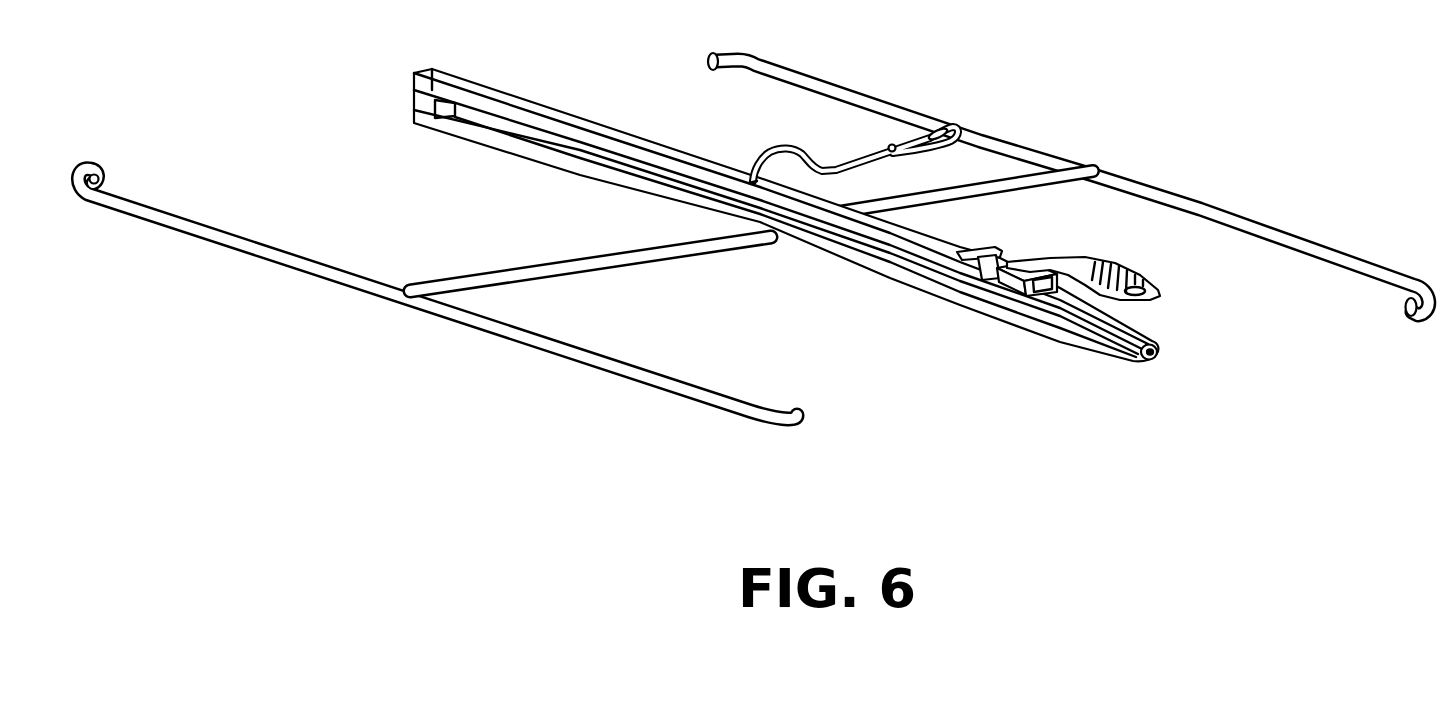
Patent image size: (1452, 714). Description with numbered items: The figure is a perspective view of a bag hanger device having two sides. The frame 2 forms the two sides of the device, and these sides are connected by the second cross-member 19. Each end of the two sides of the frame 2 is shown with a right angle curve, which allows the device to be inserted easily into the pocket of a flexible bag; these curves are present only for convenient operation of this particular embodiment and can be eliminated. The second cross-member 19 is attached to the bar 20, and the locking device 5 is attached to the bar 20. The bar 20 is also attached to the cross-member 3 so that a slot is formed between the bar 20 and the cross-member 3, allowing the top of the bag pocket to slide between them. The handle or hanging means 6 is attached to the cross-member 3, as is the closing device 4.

The frame 2 is at (1337, 253).
The cross-member 3 is at (785, 215).
The closing device 4 is at (1072, 247).
The locking device 5 is at (1160, 357).
The handle or hanging means 6 is at (817, 157).
The second cross-member 19 is at (958, 188).
The bar 20 is at (502, 143).